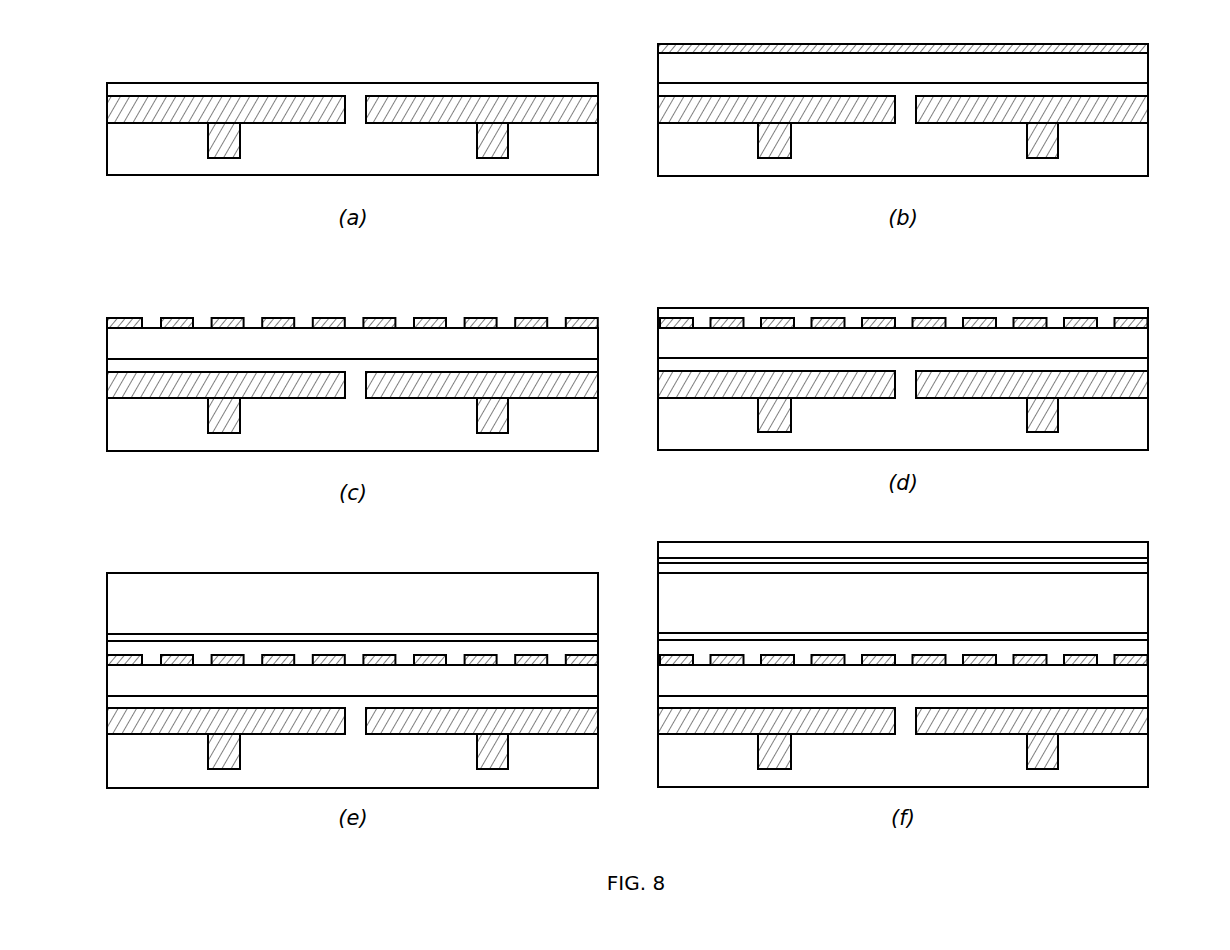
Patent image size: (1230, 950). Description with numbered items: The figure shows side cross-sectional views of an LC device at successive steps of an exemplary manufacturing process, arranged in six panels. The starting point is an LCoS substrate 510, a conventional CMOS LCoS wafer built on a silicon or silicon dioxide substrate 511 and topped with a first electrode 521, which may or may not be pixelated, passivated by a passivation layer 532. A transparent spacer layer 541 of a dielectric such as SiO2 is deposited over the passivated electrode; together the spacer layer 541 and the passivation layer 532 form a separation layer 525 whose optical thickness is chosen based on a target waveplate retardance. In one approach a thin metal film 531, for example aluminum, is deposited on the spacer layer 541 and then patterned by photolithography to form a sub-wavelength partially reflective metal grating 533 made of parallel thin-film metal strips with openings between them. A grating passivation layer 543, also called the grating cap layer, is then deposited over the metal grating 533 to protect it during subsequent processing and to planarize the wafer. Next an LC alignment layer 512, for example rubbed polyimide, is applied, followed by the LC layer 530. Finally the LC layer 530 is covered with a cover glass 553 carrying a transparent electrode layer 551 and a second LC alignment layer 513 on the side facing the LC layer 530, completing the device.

The LCoS substrate 510 is at (221, 46).
The silicon or silicon dioxide substrate 511 is at (336, 168).
The LC alignment layer 512 is at (228, 637).
The second LC alignment layer 513 is at (1150, 568).
The first electrode 521 is at (175, 123).
The separation layer 525 is at (652, 44).
The LC layer 530 is at (308, 613).
The thin metal film 531 is at (1040, 52).
The passivation layer 532 is at (107, 83).
The metal grating 533 is at (428, 323).
The spacer layer 541 is at (865, 76).
The grating passivation layer 543 is at (1140, 311).
The transparent electrode layer 551 is at (1150, 559).
The cover glass 553 is at (658, 550).